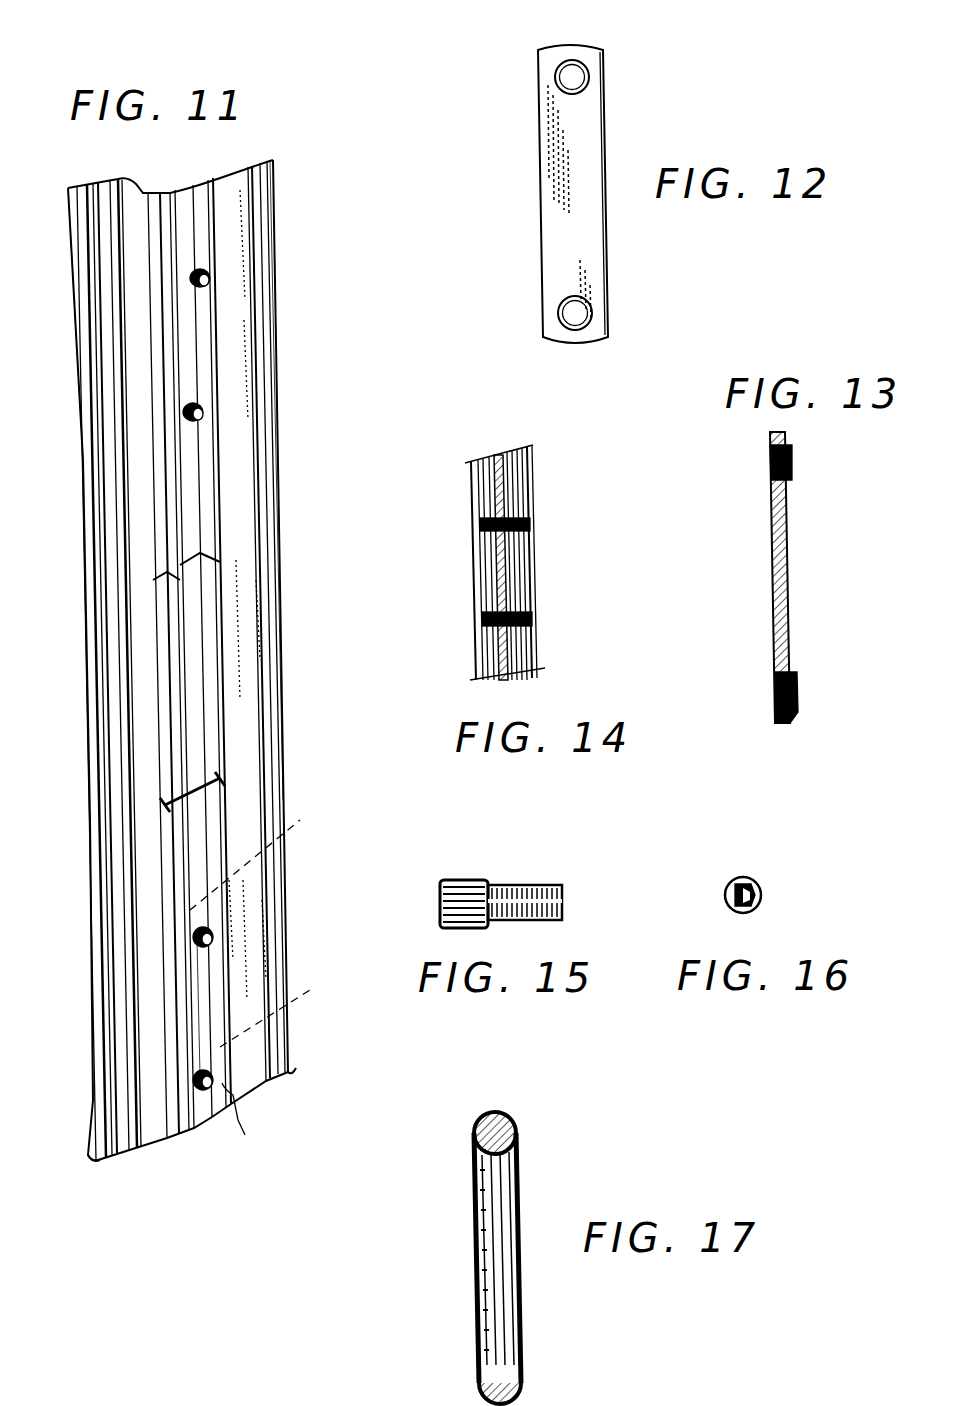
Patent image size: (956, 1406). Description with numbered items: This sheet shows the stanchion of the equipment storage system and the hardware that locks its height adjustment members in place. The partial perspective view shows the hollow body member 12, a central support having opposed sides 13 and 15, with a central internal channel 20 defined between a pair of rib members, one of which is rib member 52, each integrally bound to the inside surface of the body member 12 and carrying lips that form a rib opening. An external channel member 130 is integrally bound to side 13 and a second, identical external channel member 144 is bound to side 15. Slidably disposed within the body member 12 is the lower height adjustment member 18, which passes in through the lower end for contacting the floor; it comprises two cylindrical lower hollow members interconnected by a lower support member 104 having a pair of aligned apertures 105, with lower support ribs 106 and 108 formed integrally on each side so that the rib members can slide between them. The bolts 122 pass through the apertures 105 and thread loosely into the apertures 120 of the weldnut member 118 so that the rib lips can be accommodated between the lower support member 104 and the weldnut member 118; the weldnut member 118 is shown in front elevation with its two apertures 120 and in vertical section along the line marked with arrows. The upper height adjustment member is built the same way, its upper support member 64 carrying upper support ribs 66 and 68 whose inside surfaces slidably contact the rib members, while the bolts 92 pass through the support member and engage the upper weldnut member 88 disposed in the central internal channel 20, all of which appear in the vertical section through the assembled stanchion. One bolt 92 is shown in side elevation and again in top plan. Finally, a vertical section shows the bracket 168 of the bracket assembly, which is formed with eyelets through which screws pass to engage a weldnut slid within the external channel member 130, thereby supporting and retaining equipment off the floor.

In FIG. 14, the hollow body member 12 is at (482, 632).
In FIG. 11, the side 13 is at (233, 230).
In FIG. 12, the side 13 is at (570, 37).
In FIG. 11, the side 15 is at (122, 303).
In FIG. 11, the lower height adjustment member 18 is at (50, 1007).
In FIG. 11, the central internal channel 20 is at (180, 725).
In FIG. 14, the rib member 52 is at (475, 540).
In FIG. 11, the upper support member 64 is at (150, 440).
In FIG. 11, the upper support rib 66 is at (213, 325).
In FIG. 14, the upper support rib 66 is at (525, 553).
In FIG. 11, the upper support rib 68 is at (168, 372).
In FIG. 14, the weldnut member 88 is at (488, 573).
In FIG. 11, the bolt 92 is at (205, 278).
In FIG. 14, the bolt 92 is at (530, 514).
In FIG. 15, the bolt 92 is at (490, 880).
In FIG. 16, the bolt 92 is at (735, 878).
In FIG. 11, the lower support member 104 is at (197, 980).
In FIG. 11, the aperture 105 is at (268, 927).
In FIG. 11, the lower support rib 106 is at (249, 1118).
In FIG. 11, the lower support rib 108 is at (108, 1160).
In FIG. 12, the weldnut member 118 is at (550, 255).
In FIG. 13, the weldnut member 118 is at (786, 575).
In FIG. 12, the aperture 120 is at (577, 78).
In FIG. 13, the aperture 120 is at (792, 468).
In FIG. 11, the bolt 122 is at (208, 948).
In FIG. 11, the external channel member 130 is at (277, 453).
In FIG. 11, the second external channel member 144 is at (85, 605).
In FIG. 17, the bracket 168 is at (487, 1232).